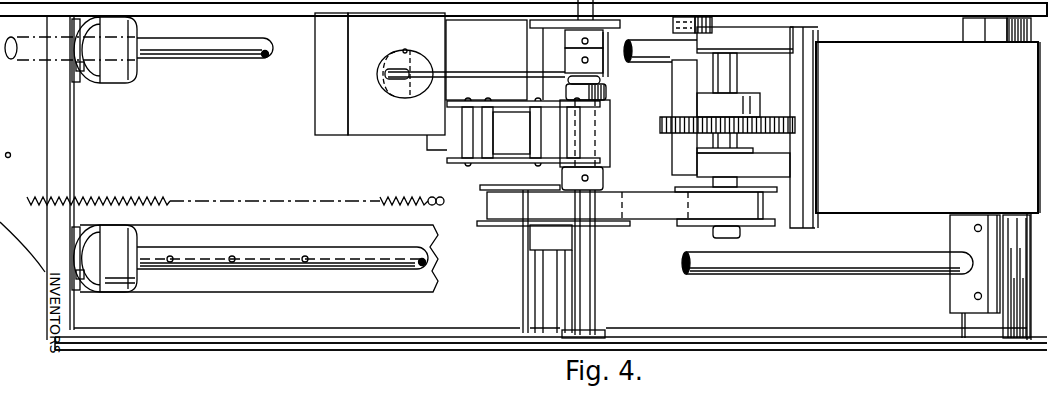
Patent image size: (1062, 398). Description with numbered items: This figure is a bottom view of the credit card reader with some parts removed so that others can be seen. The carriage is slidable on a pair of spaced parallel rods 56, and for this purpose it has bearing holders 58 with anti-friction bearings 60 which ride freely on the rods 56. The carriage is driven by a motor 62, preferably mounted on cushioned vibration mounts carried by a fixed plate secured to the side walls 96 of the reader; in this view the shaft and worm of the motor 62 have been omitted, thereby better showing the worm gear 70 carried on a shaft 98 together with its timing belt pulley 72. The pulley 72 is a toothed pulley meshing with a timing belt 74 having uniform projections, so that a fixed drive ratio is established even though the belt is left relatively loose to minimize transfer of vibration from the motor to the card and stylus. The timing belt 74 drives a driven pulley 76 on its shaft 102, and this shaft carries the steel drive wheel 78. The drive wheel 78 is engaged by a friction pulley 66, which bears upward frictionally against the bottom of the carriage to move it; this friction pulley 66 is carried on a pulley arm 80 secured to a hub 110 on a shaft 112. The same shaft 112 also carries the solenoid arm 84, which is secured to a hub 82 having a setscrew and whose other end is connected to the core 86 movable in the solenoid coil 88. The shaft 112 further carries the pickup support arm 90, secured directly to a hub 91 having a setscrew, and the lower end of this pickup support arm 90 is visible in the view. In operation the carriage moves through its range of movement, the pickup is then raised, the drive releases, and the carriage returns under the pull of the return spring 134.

The spaced parallel rods 56 is at (208, 44).
The bearing holders 58 is at (122, 56).
The anti-friction bearings 60 is at (79, 78).
The motor 62 is at (940, 112).
The friction pulley 66 is at (433, 143).
The worm gear 70 is at (668, 133).
The timing belt pulley 72 is at (762, 227).
The timing belt 74 is at (664, 214).
The driven pulley 76 is at (483, 226).
The drive wheel 78 is at (518, 143).
The pulley arm 80 is at (452, 166).
The hub 82 is at (565, 61).
The solenoid arm 84 is at (467, 72).
The solenoid core 86 is at (398, 50).
The solenoid coil 88 is at (321, 97).
The pickup support arm 90 is at (677, 78).
The hub 91 is at (565, 43).
The side walls 96 is at (432, 343).
The shaft 98 is at (739, 80).
The shaft 102 is at (543, 310).
The hub 110 is at (604, 176).
The shaft 112 is at (597, 292).
The return spring 134 is at (117, 198).